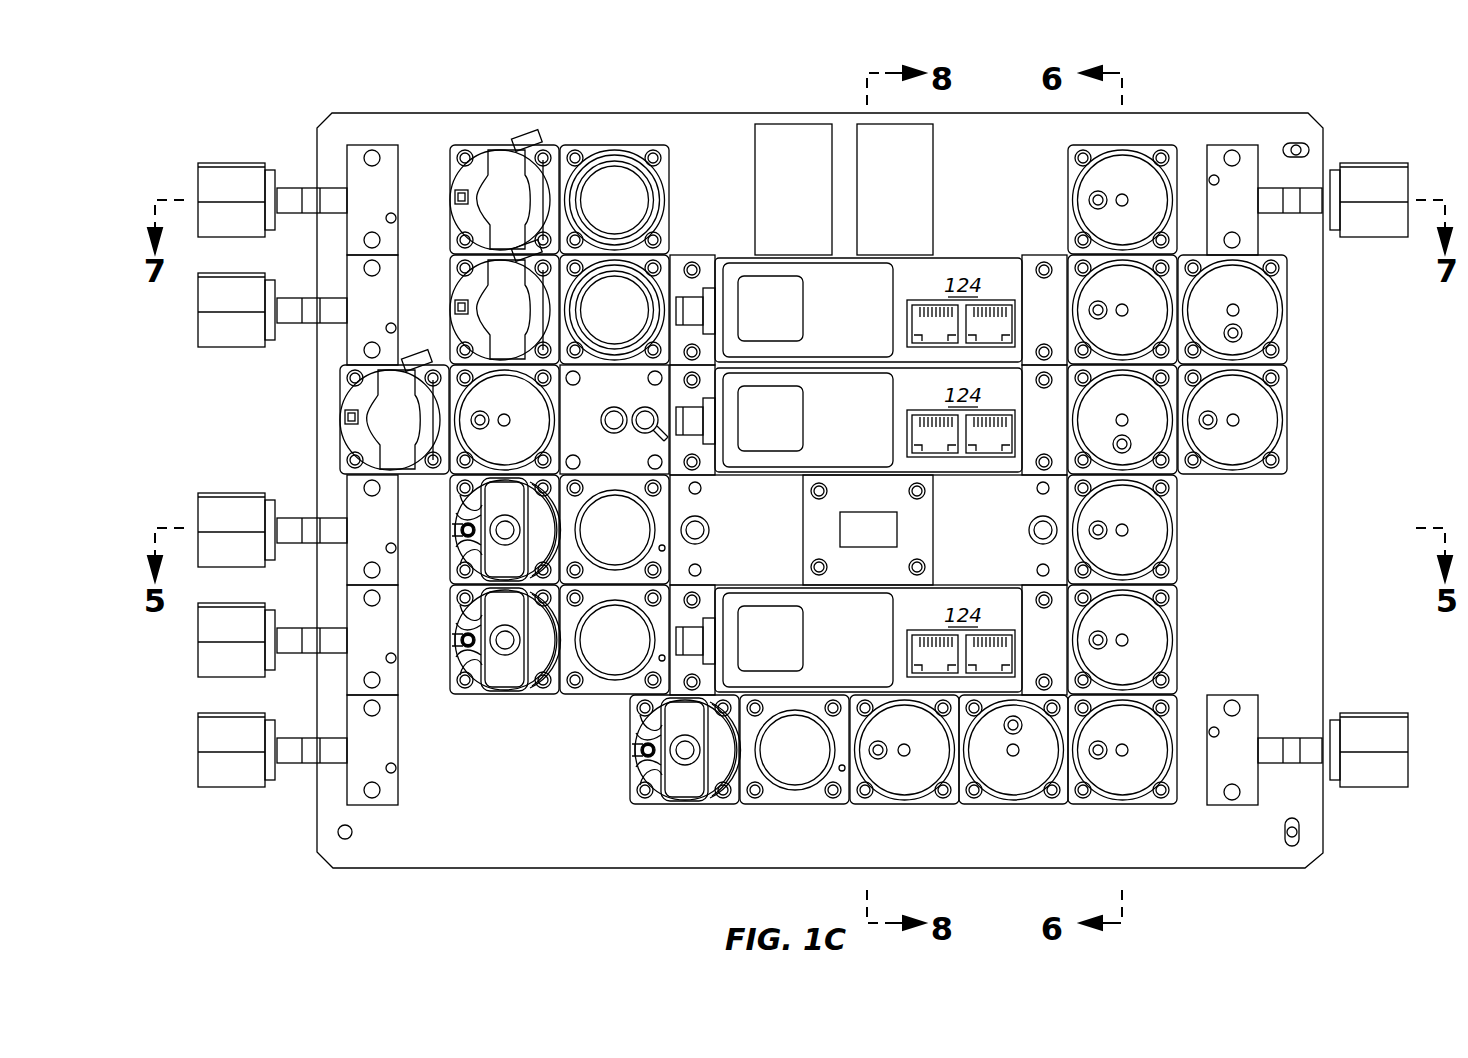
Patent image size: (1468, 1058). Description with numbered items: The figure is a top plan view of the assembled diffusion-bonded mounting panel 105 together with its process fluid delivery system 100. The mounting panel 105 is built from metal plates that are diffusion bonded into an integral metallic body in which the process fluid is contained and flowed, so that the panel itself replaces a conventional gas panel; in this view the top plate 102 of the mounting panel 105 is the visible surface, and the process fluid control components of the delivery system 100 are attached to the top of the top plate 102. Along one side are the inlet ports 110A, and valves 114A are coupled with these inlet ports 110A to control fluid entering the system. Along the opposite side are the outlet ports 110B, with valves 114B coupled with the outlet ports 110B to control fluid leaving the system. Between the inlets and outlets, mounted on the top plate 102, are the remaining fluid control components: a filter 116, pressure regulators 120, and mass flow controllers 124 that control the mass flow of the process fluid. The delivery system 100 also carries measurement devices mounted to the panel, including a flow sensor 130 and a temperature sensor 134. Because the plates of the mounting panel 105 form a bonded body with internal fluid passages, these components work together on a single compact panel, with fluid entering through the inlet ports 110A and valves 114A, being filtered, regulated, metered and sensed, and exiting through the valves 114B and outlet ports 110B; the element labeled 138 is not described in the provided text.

The process fluid delivery system 100 is at (152, 102).
The top plate 102 is at (508, 782).
The diffusion-bonded mounting panel 105 is at (410, 868).
The inlet ports 110A is at (155, 163).
The outlet ports 110B is at (1352, 163).
The valves 114A is at (473, 215).
The valves 114B is at (1152, 200).
The filter 116 is at (600, 547).
The pressure regulators 120 is at (625, 305).
The mass flow controllers 124 is at (868, 475).
The flow sensor 130 is at (935, 528).
The temperature sensor 134 is at (795, 124).
The block 138 is at (858, 124).